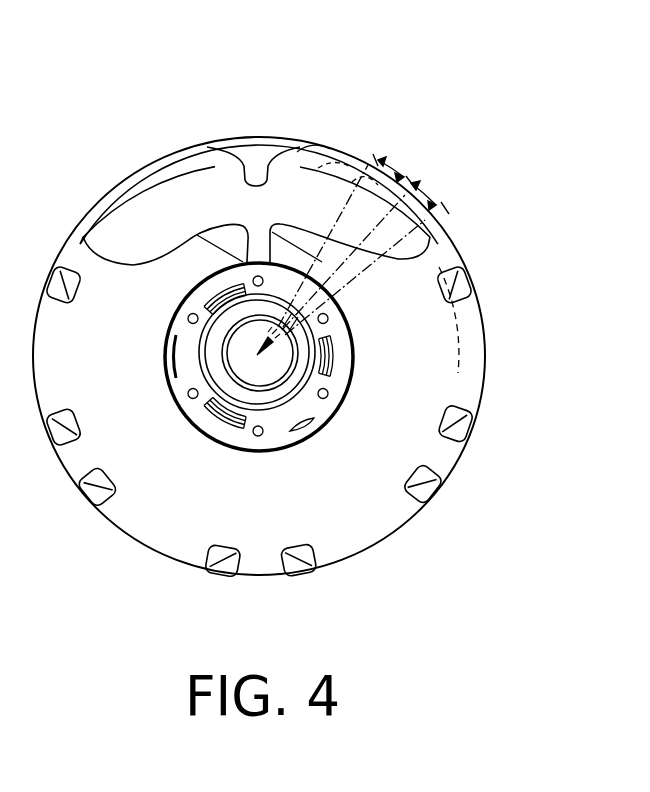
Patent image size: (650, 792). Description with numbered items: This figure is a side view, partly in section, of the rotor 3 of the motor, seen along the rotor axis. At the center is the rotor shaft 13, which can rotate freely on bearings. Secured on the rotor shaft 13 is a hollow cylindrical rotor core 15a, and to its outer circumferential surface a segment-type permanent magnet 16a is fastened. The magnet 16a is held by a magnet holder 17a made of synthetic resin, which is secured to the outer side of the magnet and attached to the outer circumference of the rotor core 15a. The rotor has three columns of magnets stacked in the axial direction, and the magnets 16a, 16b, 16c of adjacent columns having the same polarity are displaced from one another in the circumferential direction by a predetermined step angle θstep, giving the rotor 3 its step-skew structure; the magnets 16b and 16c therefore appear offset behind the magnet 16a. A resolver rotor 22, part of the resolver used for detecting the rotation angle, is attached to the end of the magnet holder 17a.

The rotor 3 is at (500, 246).
The rotor shaft 13 is at (231, 396).
The rotor core 15a is at (190, 197).
The magnet 16a is at (293, 160).
The magnet 16b is at (340, 186).
The magnet 16c is at (363, 170).
The magnet holder 17a is at (240, 155).
The resolver rotor 22 is at (310, 404).